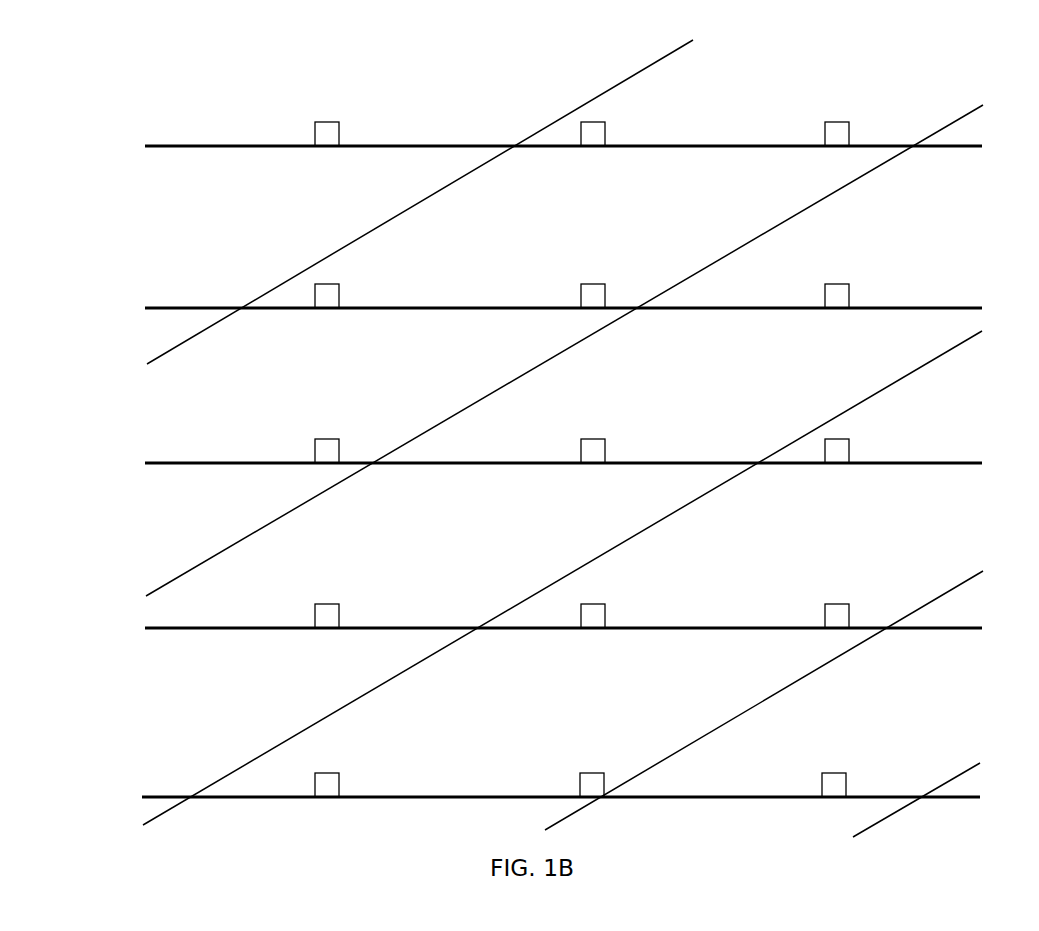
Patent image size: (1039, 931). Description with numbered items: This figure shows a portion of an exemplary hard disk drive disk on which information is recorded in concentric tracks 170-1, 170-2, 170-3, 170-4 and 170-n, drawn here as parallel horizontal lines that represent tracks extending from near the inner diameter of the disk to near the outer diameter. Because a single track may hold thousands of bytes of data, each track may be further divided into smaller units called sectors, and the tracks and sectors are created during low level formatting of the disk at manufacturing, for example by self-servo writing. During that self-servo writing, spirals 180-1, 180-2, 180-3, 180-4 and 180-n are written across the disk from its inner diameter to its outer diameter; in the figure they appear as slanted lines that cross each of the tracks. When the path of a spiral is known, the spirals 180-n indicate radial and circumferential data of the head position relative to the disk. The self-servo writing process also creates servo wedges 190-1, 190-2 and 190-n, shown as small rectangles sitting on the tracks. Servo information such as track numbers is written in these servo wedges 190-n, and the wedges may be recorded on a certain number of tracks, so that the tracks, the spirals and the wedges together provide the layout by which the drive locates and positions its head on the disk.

The concentric track 170-1 is at (532, 145).
The concentric track 170-2 is at (532, 307).
The concentric track 170-3 is at (532, 462).
The concentric track 170-4 is at (532, 627).
The concentric track 170-n is at (532, 797).
The spiral 180-1 is at (420, 198).
The spiral 180-2 is at (564, 350).
The spiral 180-3 is at (565, 578).
The spiral 180-4 is at (764, 696).
The spiral 180-n is at (916, 784).
The servo wedge 190-1 is at (331, 151).
The servo wedge 190-2 is at (591, 150).
The servo wedge 190-n is at (833, 150).